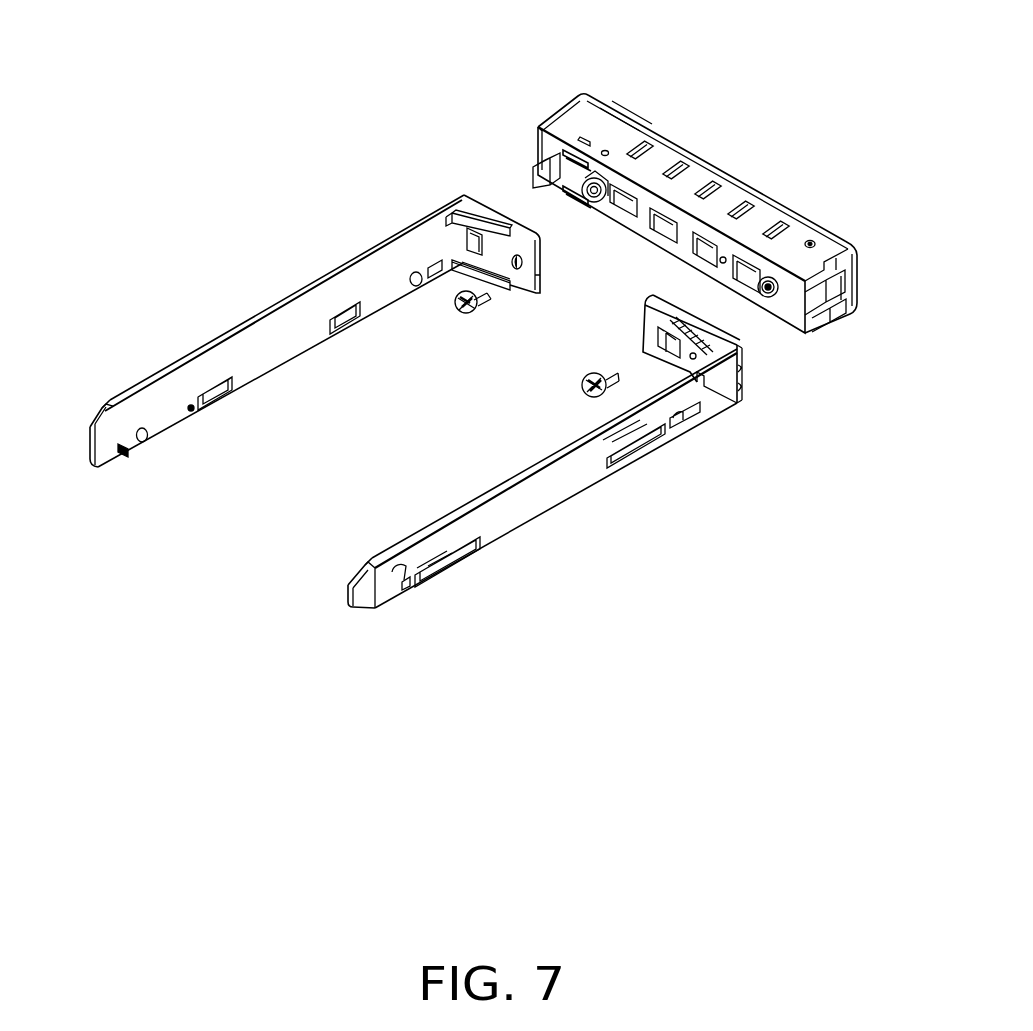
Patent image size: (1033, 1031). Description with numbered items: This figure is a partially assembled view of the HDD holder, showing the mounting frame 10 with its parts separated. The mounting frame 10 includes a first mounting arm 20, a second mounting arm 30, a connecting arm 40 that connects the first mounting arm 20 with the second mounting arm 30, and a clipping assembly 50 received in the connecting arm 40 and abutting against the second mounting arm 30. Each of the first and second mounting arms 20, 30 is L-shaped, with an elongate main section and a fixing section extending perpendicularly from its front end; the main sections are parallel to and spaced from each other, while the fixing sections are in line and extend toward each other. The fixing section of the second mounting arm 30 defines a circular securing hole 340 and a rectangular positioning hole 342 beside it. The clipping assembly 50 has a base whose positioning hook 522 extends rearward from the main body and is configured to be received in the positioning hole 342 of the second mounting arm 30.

The mounting frame 10 is at (279, 44).
The first mounting arm 20 is at (575, 468).
The second mounting arm 30 is at (290, 342).
The connecting arm 40 is at (693, 180).
The clipping assembly 50 is at (550, 143).
The securing hole 340 is at (512, 275).
The positioning hole 342 is at (477, 242).
The positioning hook 522 is at (530, 180).